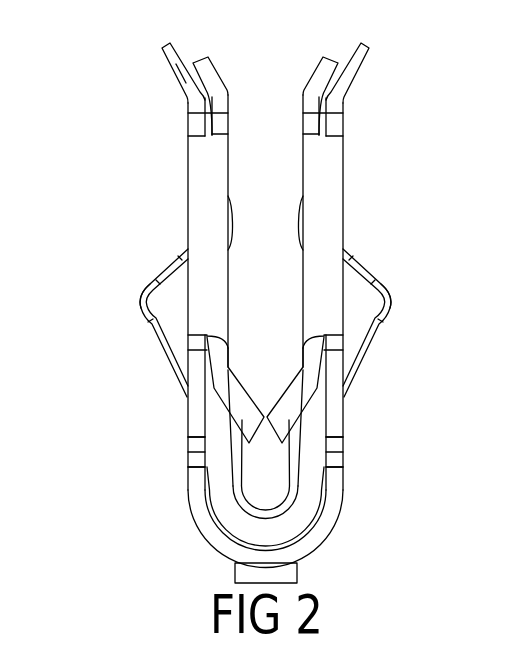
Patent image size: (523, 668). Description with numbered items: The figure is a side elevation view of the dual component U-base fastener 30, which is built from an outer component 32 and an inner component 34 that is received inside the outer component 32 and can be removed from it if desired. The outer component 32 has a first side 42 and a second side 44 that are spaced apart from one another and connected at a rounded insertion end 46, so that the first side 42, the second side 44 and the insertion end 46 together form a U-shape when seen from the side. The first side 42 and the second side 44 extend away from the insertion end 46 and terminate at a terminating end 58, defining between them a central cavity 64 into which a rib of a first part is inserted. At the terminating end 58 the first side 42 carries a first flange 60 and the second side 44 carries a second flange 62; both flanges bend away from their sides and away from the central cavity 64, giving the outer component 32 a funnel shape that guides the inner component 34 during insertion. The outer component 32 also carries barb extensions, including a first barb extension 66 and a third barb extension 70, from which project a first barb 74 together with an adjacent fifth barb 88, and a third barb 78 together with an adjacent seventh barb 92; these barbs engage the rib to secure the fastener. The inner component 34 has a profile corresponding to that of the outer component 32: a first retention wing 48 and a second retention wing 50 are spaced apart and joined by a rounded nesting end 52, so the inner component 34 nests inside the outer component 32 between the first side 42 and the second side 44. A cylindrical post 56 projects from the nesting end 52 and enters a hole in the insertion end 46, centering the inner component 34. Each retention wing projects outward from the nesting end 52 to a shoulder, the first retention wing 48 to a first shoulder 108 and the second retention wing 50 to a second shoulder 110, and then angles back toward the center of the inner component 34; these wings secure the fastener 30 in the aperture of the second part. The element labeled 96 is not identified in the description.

The dual component U-base fastener 30 is at (112, 62).
The outer component 32 is at (357, 145).
The inner component 34 is at (380, 260).
The first side 42 is at (188, 185).
The second side 44 is at (345, 187).
The insertion end 46 is at (267, 558).
The first retention wing 48 is at (153, 336).
The second retention wing 50 is at (380, 335).
The nesting end 52 is at (268, 535).
The post 56 is at (283, 575).
The terminating end 58 is at (167, 43).
The first flange 60 is at (181, 74).
The second flange 62 is at (358, 75).
The central cavity 64 is at (265, 90).
The first barb extension 66 is at (228, 148).
The third barb extension 70 is at (303, 180).
The first barb 74 is at (243, 424).
The third barb 78 is at (295, 387).
The fifth barb 88 is at (243, 390).
The seventh barb 92 is at (290, 425).
The inner tabs 96 is at (212, 77).
The first shoulder 108 is at (143, 289).
The second shoulder 110 is at (388, 290).